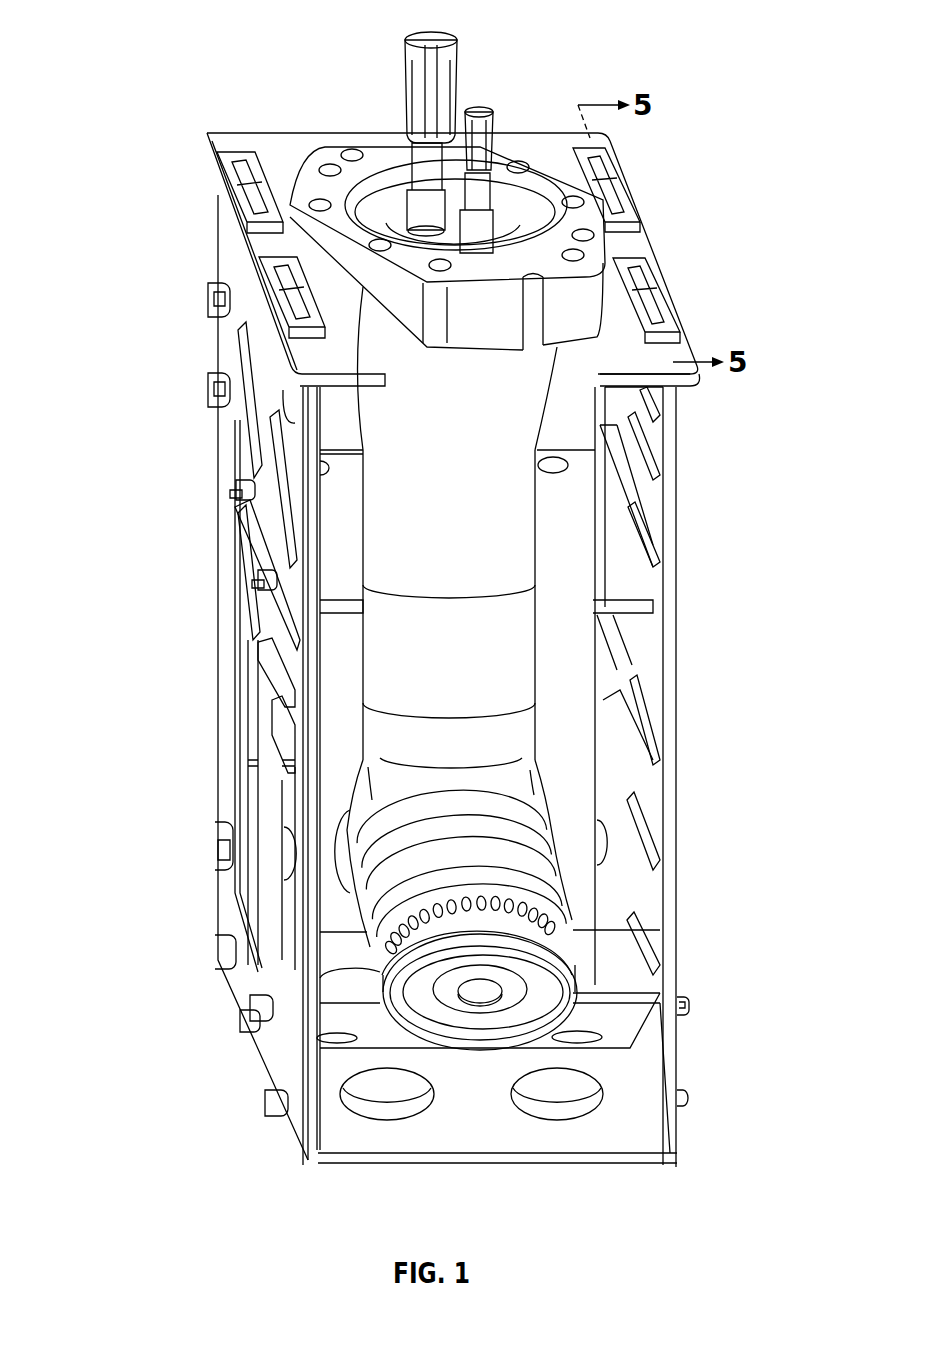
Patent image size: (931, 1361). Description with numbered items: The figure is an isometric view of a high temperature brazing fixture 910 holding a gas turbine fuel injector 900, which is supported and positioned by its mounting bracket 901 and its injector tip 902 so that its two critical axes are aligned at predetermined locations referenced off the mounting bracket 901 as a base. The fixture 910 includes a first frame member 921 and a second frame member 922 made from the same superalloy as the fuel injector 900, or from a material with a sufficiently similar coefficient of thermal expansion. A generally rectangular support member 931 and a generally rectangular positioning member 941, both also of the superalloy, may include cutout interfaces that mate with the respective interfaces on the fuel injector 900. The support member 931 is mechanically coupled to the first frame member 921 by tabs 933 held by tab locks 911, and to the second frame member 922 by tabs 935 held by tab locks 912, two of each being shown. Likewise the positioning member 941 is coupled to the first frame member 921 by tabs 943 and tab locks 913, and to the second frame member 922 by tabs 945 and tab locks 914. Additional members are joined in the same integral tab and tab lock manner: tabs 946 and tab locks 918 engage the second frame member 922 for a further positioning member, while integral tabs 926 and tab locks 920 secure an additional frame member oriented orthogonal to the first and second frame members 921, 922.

The gas turbine fuel injector 900 is at (515, 665).
The mounting bracket 901 is at (470, 333).
The injector tip 902 is at (450, 1040).
The high temperature brazing fixture 910 is at (158, 72).
The tab lock 911 is at (632, 217).
The tab lock 912 is at (248, 217).
The tab lock 913 is at (686, 1013).
The tab lock 914 is at (283, 1025).
The tab lock 918 is at (236, 483).
The tab lock 920 is at (218, 318).
The first frame member 921 is at (680, 690).
The second frame member 922 is at (228, 445).
The tab 926 is at (207, 302).
The support member 931 is at (690, 392).
The tab 933 is at (607, 170).
The tab 935 is at (214, 140).
The positioning member 941 is at (641, 1010).
The tab 943 is at (686, 1000).
The tab 945 is at (262, 1008).
The tab 946 is at (230, 494).